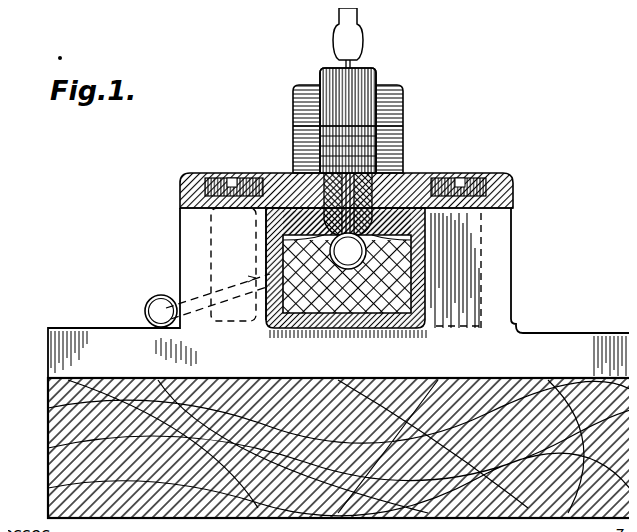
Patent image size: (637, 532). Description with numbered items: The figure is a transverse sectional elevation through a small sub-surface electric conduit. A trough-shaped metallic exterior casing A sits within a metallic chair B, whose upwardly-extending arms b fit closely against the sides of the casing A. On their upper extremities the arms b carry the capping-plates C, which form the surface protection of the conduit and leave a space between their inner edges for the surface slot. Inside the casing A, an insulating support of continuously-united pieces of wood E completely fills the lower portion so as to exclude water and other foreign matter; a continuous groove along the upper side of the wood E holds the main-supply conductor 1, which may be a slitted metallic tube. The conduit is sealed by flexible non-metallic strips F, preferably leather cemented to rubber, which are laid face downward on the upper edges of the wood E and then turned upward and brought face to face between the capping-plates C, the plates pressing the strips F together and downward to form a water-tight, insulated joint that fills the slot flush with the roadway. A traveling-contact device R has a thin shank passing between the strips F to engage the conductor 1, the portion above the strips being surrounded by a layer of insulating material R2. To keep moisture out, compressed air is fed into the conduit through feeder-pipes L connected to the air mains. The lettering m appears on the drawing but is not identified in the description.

The metallic chair B is at (338, 363).
The metallic exterior casing A is at (418, 238).
The capping-plates C is at (488, 165).
The upwardly-extending arms b is at (345, 268).
The flexible non-metallic insulating strips F is at (393, 165).
The wood insulating-support E is at (380, 283).
The main-supply conductor 1 is at (262, 233).
The traveling-contact device R is at (356, 138).
The layer of insulating material R2 is at (357, 74).
The roller m is at (142, 298).
The feeder-pipes L is at (218, 292).